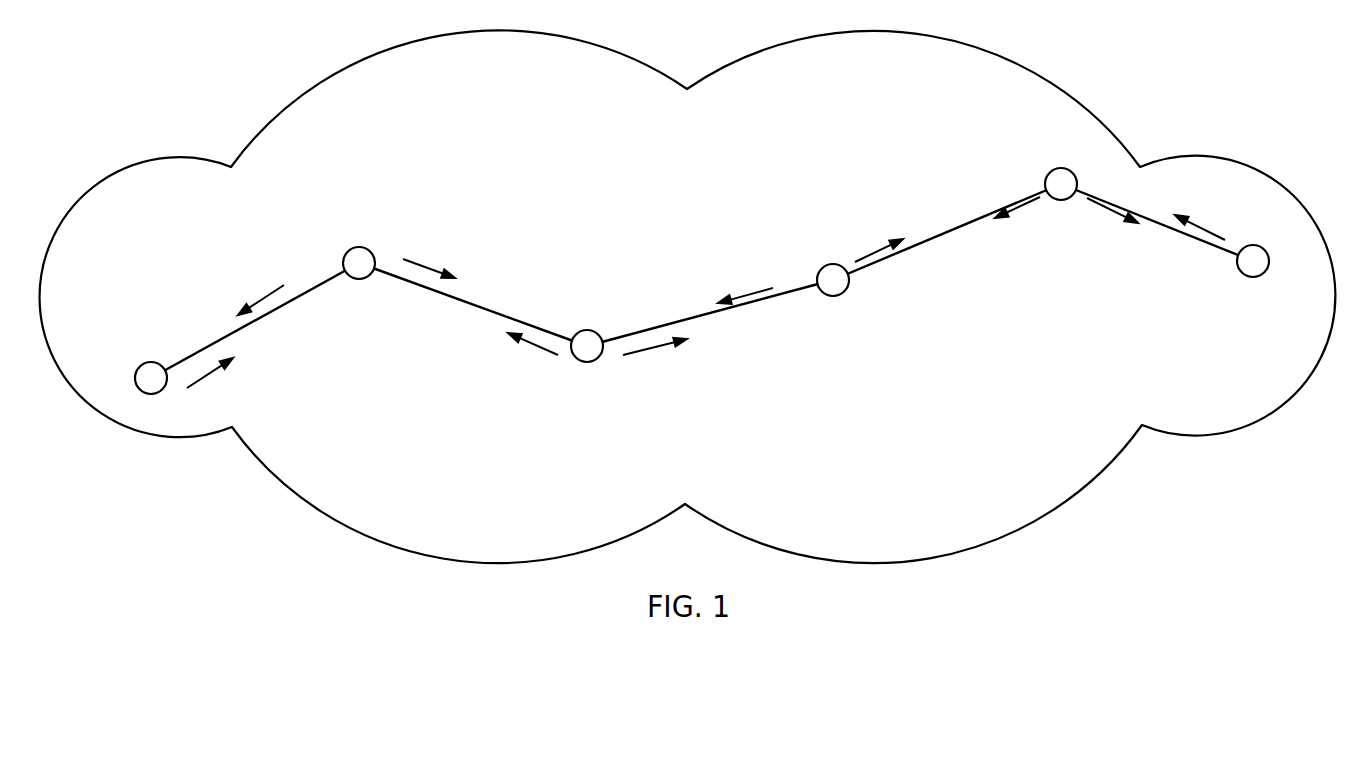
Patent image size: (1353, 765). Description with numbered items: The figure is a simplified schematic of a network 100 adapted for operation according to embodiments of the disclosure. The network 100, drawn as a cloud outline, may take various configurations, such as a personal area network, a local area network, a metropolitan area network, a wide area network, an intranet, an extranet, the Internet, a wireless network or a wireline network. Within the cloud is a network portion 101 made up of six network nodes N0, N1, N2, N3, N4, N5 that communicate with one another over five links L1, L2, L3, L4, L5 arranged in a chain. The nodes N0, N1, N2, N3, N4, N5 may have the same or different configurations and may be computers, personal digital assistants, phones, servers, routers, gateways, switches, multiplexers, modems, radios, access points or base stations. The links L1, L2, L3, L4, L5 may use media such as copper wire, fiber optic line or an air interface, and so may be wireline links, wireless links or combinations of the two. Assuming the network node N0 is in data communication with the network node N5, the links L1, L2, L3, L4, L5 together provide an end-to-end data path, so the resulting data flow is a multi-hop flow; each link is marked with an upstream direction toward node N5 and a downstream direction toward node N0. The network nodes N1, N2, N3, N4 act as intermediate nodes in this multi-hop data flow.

The network 100 is at (876, 31).
The network portion 101 is at (637, 160).
The network node N0 is at (150, 362).
The network node N1 is at (358, 247).
The network node N2 is at (592, 330).
The network node N3 is at (835, 263).
The network node N4 is at (1062, 168).
The network node N5 is at (1253, 278).
The link L1 is at (248, 327).
The link L2 is at (453, 297).
The link L3 is at (673, 325).
The link L4 is at (1013, 196).
The link L5 is at (1197, 247).